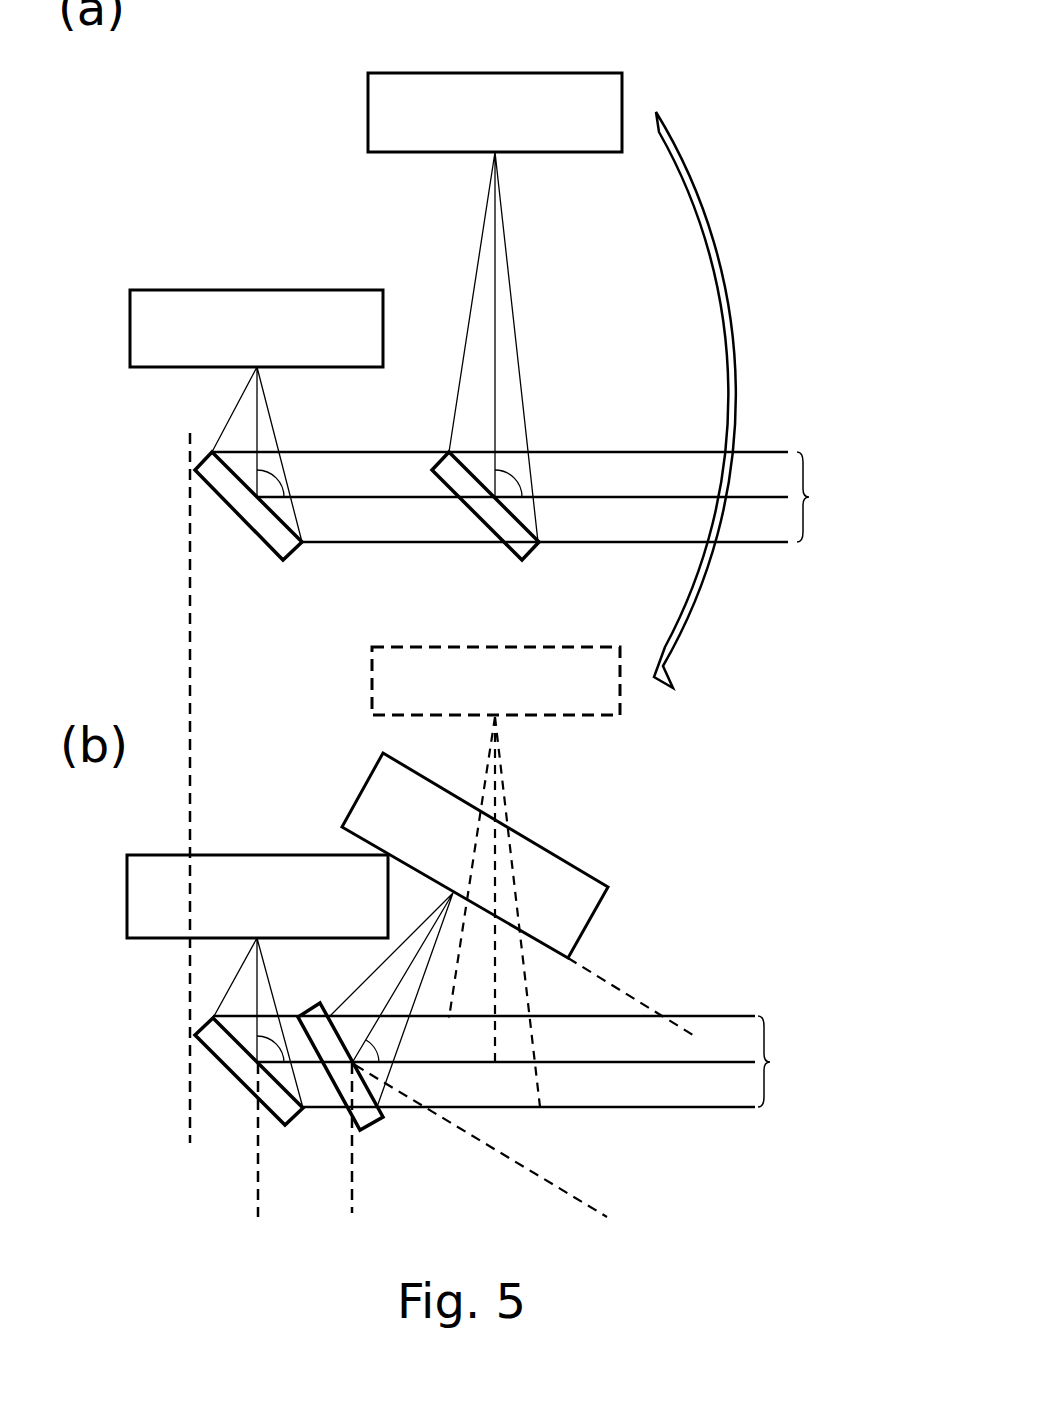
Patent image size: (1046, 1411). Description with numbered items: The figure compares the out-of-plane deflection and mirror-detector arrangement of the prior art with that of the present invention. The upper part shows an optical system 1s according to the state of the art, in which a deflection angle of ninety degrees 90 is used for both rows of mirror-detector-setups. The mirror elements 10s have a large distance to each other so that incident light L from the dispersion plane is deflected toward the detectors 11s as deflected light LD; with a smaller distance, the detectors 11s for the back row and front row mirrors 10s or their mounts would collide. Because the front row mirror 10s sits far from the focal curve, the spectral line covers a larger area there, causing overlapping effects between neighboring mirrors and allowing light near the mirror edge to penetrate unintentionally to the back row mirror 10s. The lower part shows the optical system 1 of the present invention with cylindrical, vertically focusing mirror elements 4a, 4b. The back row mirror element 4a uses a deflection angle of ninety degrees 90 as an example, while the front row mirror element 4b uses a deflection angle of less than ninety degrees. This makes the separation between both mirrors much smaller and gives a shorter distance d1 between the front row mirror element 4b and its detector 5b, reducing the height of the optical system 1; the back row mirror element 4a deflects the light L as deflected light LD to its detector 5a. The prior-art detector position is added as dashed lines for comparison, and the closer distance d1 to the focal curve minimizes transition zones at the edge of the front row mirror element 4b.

The optical system 1 is at (100, 843).
The optical system according to the state of the art 1s is at (278, 207).
The back row vertically focusing mirror element 4a is at (236, 1095).
The front row vertically focusing mirror element 4b is at (377, 1136).
The detector 5a is at (291, 911).
The detector 5b is at (468, 841).
The mirror elements according to the state of the art 10s is at (236, 532).
The detectors according to the state of the art 11s is at (279, 343).
The deflected light LD is at (230, 392).
The light from the sample L is at (546, 779).
The deflection angle of 90° 90 is at (272, 487).
The distance between the focal curve and the axis of the front row mirror d1 is at (658, 1044).